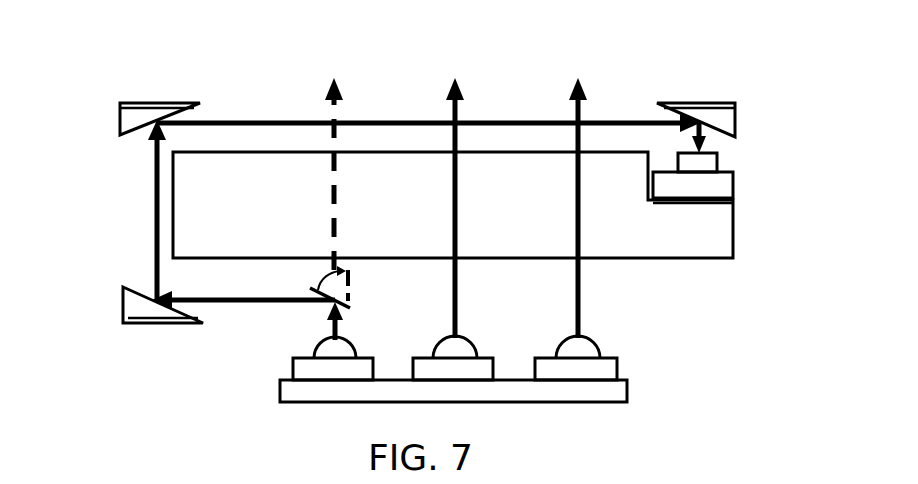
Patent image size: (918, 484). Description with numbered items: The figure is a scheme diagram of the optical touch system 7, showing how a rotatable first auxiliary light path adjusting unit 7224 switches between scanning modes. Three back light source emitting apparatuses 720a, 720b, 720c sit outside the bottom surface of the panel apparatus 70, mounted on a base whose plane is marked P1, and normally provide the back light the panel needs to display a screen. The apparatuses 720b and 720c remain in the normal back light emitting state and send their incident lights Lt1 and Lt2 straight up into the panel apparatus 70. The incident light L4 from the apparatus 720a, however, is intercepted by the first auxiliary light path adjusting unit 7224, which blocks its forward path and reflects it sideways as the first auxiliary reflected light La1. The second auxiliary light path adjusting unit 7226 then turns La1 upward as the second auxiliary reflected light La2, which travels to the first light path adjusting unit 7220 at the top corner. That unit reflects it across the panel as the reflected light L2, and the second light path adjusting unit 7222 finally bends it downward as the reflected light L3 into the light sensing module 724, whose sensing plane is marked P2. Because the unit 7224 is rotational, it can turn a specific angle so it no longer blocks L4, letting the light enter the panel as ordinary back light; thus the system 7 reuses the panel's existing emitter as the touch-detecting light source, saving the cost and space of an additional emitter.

The optical touch system 7 is at (388, 56).
The panel apparatus 70 is at (170, 233).
The light sensing module 724 is at (735, 180).
The first light path adjusting unit 7220 is at (163, 104).
The second light path adjusting unit 7222 is at (713, 103).
The first auxiliary light path adjusting unit 7224 is at (340, 303).
The second auxiliary light path adjusting unit 7226 is at (122, 323).
The back light source emitting apparatus 720a is at (293, 358).
The back light source emitting apparatus 720b is at (493, 368).
The back light source emitting apparatus 720c is at (617, 370).
The first plane (substrate surface) P1 is at (333, 380).
The second plane (detector surface) P2 is at (692, 202).
The reflected light L2 is at (428, 112).
The reflected light L3 is at (709, 139).
The incident light L4 is at (320, 210).
The first auxiliary reflected light La1 is at (243, 314).
The second auxiliary reflected light La2 is at (139, 210).
The incident light Lt1 is at (452, 193).
The incident light Lt2 is at (580, 193).